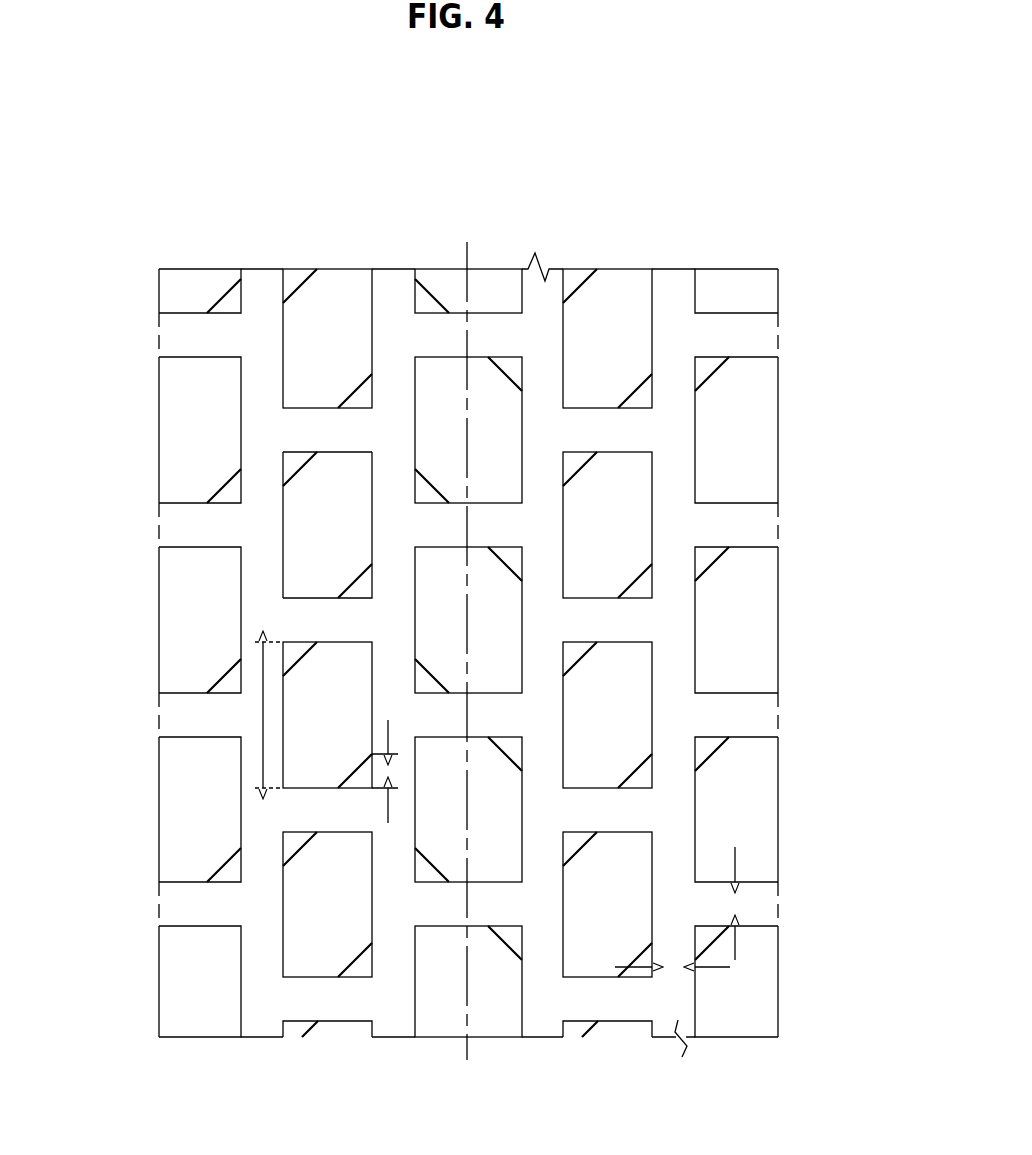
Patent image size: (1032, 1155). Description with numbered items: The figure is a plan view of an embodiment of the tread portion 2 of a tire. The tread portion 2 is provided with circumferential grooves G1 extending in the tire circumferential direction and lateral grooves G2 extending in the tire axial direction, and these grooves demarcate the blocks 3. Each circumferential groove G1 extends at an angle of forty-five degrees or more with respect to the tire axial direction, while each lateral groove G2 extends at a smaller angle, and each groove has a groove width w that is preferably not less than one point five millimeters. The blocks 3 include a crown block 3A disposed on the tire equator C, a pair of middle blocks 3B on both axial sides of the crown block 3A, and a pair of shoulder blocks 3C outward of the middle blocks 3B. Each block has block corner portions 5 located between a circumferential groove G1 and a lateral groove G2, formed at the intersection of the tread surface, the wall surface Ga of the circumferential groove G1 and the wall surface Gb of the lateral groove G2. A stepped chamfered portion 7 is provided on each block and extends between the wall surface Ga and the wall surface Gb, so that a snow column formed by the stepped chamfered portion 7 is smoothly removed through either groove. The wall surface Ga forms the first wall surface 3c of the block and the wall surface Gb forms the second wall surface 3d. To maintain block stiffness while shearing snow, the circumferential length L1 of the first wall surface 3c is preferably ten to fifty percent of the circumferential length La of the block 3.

The tread portion 2 is at (750, 187).
The block 3 is at (192, 843).
The crown block 3A is at (495, 855).
The middle block 3B is at (620, 325).
The shoulder block 3C is at (750, 590).
The first wall surface 3c is at (283, 470).
The second wall surface 3d is at (300, 452).
The block corner portion 5 is at (435, 250).
The stepped chamfered portion 7 is at (430, 495).
The tire equator C is at (467, 635).
The circumferential groove G1 is at (682, 295).
The lateral groove G2 is at (620, 430).
The wall surface of the circumferential groove Ga is at (284, 568).
The wall surface of the lateral groove Gb is at (340, 447).
The length in the tire circumferential direction of the block La is at (263, 748).
The length in the tire circumferential direction of the first wall surface L1 is at (390, 770).
The groove width w is at (738, 905).